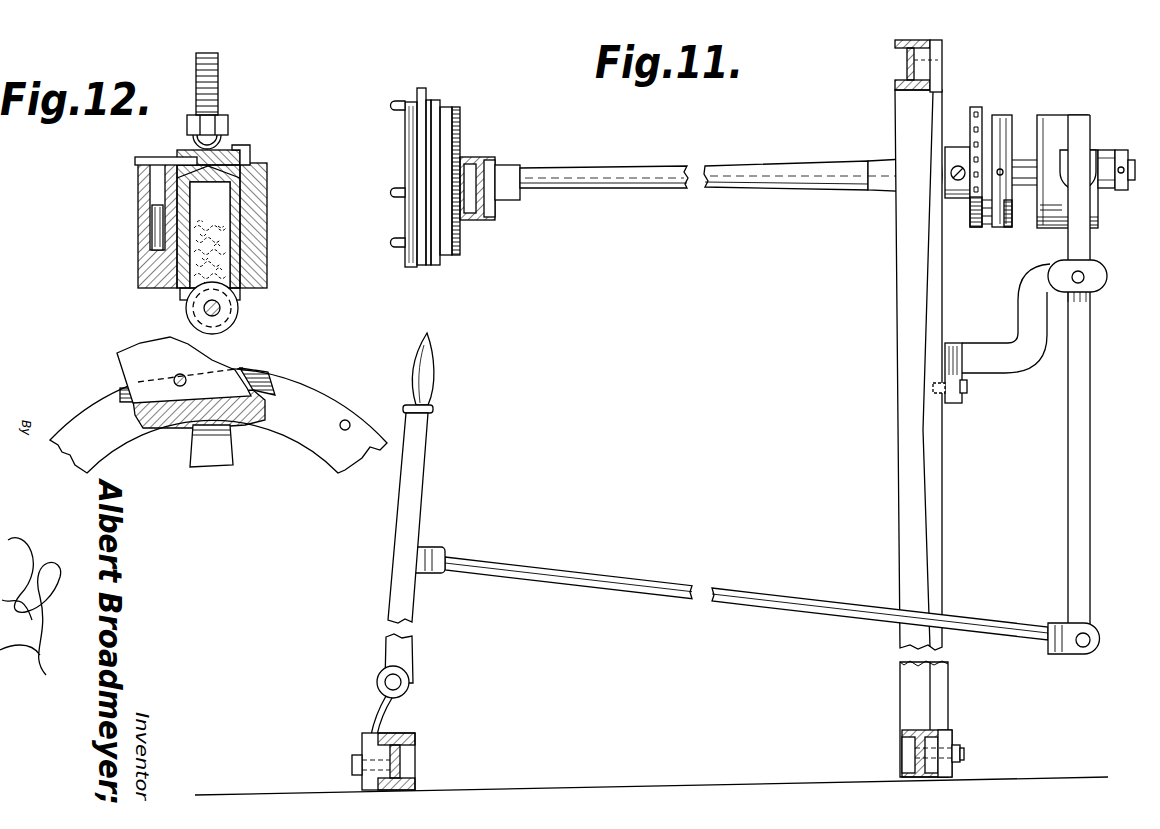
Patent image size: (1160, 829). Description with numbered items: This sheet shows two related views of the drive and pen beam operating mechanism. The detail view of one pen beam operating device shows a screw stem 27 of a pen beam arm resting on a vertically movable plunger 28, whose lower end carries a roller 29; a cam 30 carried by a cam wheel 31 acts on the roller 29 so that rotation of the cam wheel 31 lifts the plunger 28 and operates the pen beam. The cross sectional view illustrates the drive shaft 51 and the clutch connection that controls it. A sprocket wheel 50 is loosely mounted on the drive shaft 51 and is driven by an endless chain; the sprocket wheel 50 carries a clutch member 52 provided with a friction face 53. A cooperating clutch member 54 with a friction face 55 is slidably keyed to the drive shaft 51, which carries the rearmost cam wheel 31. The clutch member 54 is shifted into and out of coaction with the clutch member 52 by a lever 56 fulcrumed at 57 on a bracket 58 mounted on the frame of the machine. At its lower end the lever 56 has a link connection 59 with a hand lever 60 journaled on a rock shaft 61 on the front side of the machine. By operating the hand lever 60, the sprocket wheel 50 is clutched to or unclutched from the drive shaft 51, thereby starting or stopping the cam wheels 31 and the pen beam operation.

In FIG. 12, the screw stem 27 is at (222, 68).
In FIG. 12, the plunger 28 is at (252, 153).
In FIG. 12, the roller 29 is at (238, 312).
In FIG. 12, the cam 30 is at (140, 353).
In FIG. 12, the cam wheel 31 is at (302, 394).
In FIG. 11, the cam wheel 31 is at (413, 157).
In FIG. 11, the sprocket wheel 50 is at (981, 107).
In FIG. 11, the drive shaft 51 is at (672, 177).
In FIG. 11, the clutch member 52 is at (1003, 115).
In FIG. 11, the friction face 53 is at (1015, 222).
In FIG. 11, the cooperating clutch member 54 is at (1057, 130).
In FIG. 11, the friction face 55 is at (1042, 228).
In FIG. 11, the lever 56 is at (1082, 243).
In FIG. 11, the fulcrum 57 is at (1086, 283).
In FIG. 11, the bracket 58 is at (1010, 363).
In FIG. 11, the link connection 59 is at (683, 590).
In FIG. 11, the hand lever 60 is at (418, 503).
In FIG. 11, the rock shaft 61 is at (385, 679).